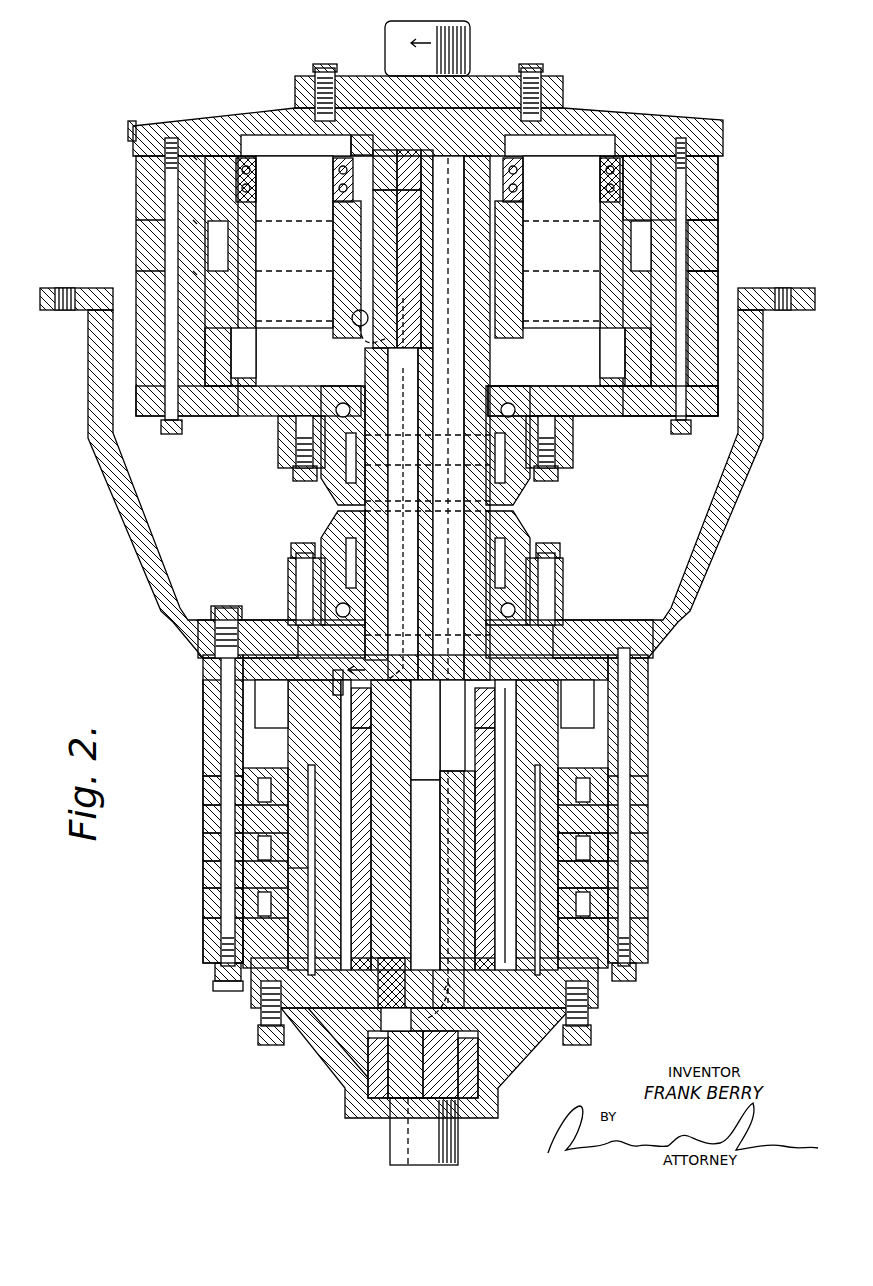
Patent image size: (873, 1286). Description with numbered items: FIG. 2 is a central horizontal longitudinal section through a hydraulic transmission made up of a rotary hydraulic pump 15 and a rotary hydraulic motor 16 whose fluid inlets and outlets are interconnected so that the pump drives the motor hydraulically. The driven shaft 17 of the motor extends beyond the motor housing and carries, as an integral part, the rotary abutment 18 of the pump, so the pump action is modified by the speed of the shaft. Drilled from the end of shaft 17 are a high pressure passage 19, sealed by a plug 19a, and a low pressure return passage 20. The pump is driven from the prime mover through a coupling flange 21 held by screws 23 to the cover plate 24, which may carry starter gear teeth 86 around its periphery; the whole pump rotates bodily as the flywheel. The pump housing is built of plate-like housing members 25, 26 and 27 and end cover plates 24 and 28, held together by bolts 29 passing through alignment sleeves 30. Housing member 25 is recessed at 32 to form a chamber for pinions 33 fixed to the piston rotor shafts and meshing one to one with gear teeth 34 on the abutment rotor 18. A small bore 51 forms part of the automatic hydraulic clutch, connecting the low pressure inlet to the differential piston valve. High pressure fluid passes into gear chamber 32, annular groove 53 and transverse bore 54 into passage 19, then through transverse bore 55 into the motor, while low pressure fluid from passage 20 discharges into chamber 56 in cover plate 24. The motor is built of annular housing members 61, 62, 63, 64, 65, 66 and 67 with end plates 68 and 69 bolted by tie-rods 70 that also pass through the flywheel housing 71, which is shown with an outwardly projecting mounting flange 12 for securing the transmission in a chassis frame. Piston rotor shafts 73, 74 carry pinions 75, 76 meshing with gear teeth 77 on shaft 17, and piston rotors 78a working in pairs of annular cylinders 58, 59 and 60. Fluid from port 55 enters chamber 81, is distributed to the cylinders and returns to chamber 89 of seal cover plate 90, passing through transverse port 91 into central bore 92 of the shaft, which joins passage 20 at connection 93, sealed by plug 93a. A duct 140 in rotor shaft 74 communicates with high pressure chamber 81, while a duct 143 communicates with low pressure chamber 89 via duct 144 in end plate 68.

The mounting flange 12 is at (45, 302).
The rotary hydraulic pump 15 is at (122, 189).
The rotary hydraulic motor 16 is at (186, 736).
The driven shaft 17 is at (385, 1130).
The rotary abutment 18 is at (352, 145).
The fluid passage 19 is at (401, 380).
The plug 19a is at (395, 150).
The fluid passage 20 is at (451, 385).
The coupling flange 21 is at (290, 86).
The screws 23 is at (308, 62).
The cover plate 24 is at (188, 118).
The housing member 25 is at (705, 272).
The housing member 26 is at (705, 222).
The housing member 27 is at (705, 168).
The end cover plate 28 is at (576, 410).
The bolts 29 is at (160, 240).
The alignment sleeves 30 is at (145, 282).
The recess 32 is at (632, 370).
The pinions 33 is at (233, 375).
The gear teeth 34 is at (353, 343).
The small bore 51 is at (262, 235).
The annular groove 53 is at (344, 308).
The transverse bore 54 is at (412, 300).
The transverse bore 55 is at (380, 674).
The chamber 56 is at (456, 125).
The annular cylinders 58 is at (562, 888).
The annular cylinders 59 is at (562, 840).
The annular cylinders 60 is at (562, 776).
The housing member 61 is at (197, 940).
The housing member 62 is at (197, 898).
The housing member 63 is at (197, 870).
The housing member 64 is at (197, 840).
The housing member 65 is at (200, 808).
The housing member 66 is at (197, 778).
The housing member 67 is at (197, 746).
The end plate 68 is at (207, 966).
The end plate 69 is at (200, 655).
The tie-rods 70 is at (213, 690).
The flywheel housing 71 is at (700, 540).
The piston rotor shaft 73 is at (330, 708).
The piston rotor shaft 74 is at (528, 700).
The pinion 75 is at (300, 700).
The pinion 76 is at (580, 692).
The gear teeth 77 is at (482, 688).
The piston rotors 78a is at (252, 782).
The chamber 81 is at (312, 615).
The gear teeth 86 is at (125, 120).
The chamber 89 is at (345, 1045).
The seal cover plate 90 is at (482, 1095).
The transverse port 91 is at (375, 1008).
The central bore 92 is at (441, 870).
The connection 93 is at (425, 730).
The plug 93a is at (445, 725).
The fluid duct 140 is at (328, 686).
The fluid duct 143 is at (298, 872).
The duct 144 is at (265, 1012).